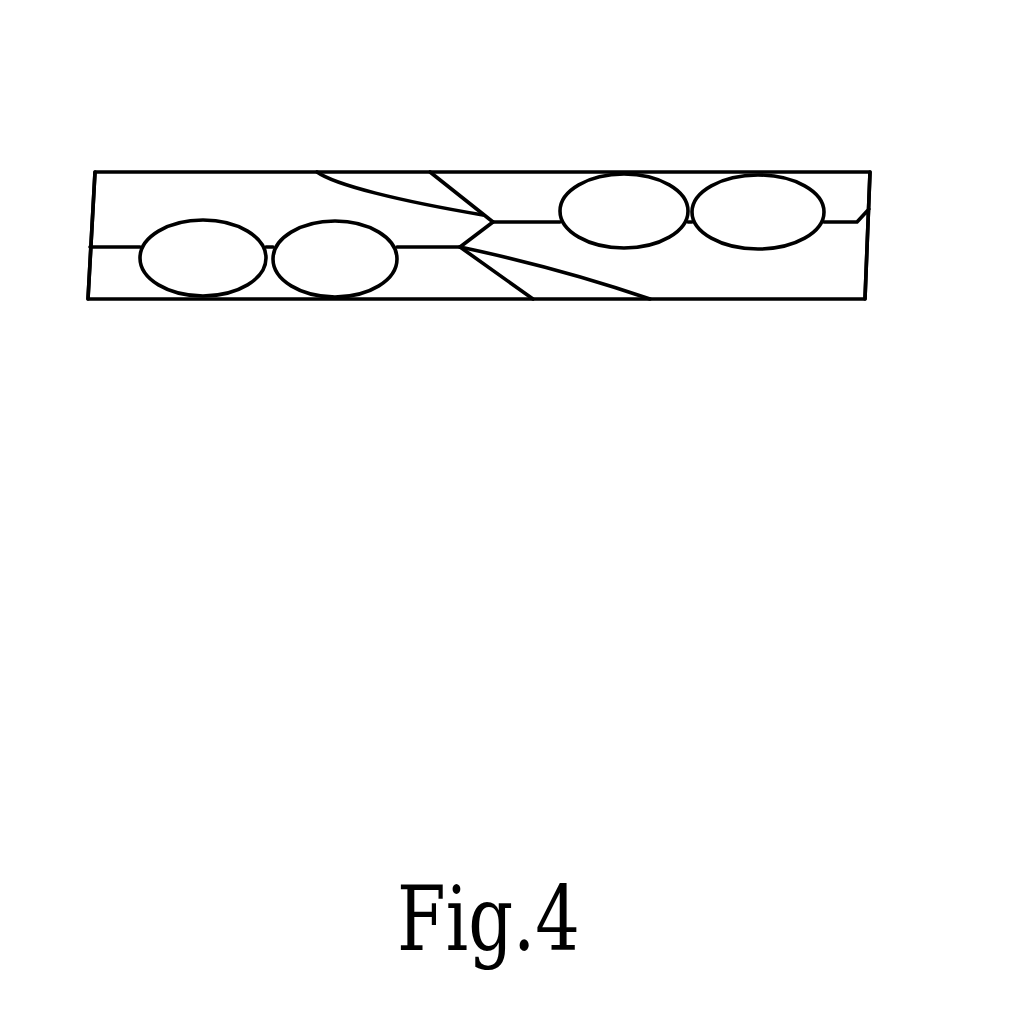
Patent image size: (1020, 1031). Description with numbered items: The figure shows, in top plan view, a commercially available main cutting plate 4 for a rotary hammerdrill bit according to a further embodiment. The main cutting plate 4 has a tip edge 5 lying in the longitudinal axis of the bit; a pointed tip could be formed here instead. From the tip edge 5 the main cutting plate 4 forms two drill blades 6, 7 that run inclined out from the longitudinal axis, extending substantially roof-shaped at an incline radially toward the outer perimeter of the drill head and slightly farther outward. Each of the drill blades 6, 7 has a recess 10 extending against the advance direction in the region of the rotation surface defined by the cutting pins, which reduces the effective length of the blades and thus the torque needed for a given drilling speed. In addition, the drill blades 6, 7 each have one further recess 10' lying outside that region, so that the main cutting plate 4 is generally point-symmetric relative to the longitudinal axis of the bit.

The main cutting plate 4 is at (560, 283).
The tip edge 5 is at (466, 232).
The drill blade 6 is at (850, 228).
The drill blade 7 is at (103, 250).
The recess 10 is at (500, 217).
The further recess 10' is at (483, 223).